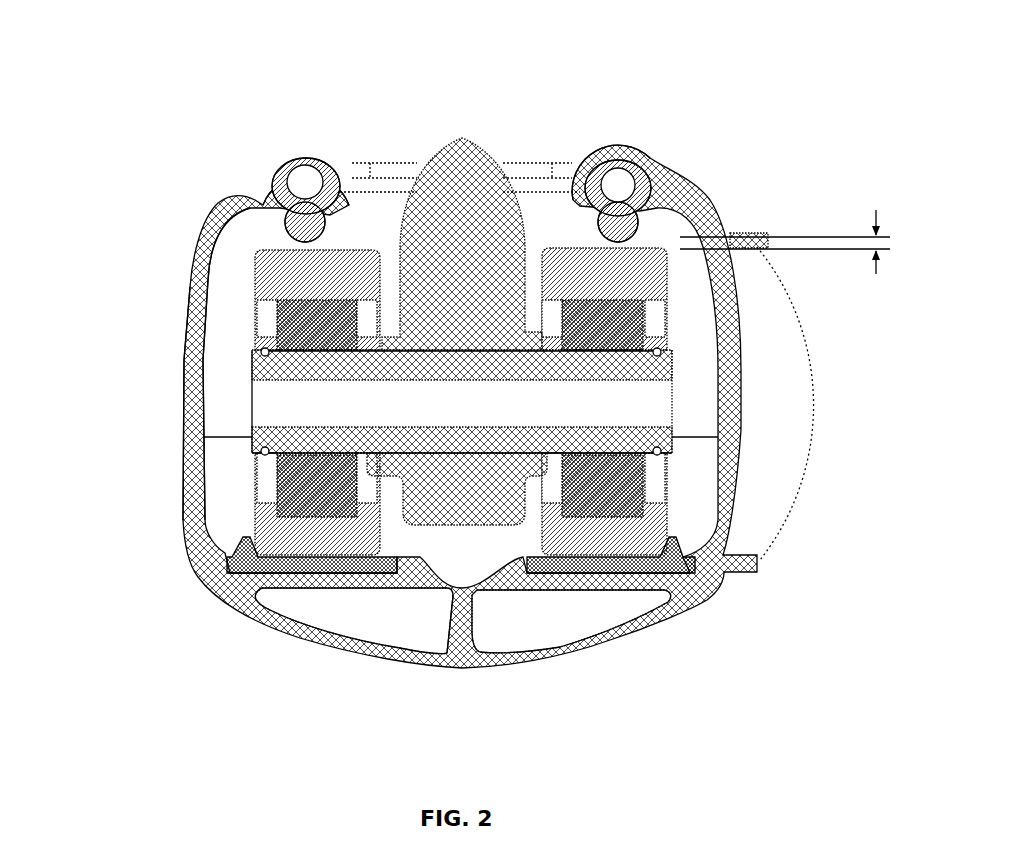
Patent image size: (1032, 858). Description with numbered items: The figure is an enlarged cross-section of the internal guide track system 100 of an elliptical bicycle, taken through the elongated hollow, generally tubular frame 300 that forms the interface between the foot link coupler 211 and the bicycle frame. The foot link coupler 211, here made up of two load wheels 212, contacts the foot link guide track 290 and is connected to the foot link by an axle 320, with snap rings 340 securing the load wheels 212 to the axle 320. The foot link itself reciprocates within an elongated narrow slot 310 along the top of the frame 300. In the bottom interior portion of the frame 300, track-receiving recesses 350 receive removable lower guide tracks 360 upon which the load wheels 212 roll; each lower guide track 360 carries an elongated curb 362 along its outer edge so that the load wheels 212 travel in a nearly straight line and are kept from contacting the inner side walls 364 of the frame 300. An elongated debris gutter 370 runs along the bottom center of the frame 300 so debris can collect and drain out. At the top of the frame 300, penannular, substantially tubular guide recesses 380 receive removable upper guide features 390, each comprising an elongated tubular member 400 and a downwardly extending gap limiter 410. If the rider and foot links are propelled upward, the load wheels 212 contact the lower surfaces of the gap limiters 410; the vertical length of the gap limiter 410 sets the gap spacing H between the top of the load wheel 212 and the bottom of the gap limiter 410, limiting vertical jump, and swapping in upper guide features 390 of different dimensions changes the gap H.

The internal guide track system 100 is at (138, 80).
The foot link guide track 290 is at (832, 83).
The foot link coupler 211 is at (228, 273).
The load wheels 212 is at (333, 262).
The frame 300 is at (378, 655).
The slot 310 is at (390, 160).
The axle 320 is at (250, 352).
The snap rings 340 is at (256, 449).
The track-receiving recesses 350 is at (335, 580).
The lower guide tracks 360 is at (565, 575).
The elongated curb 362 is at (242, 538).
The inner side walls 364 is at (208, 382).
The debris gutter 370 is at (430, 587).
The guide recesses 380 is at (277, 148).
The upper guide features 390 is at (305, 163).
The elongated tubular member 400 is at (642, 152).
The downwardly extending gap limiter 410 is at (634, 222).
The gap spacing H is at (791, 240).